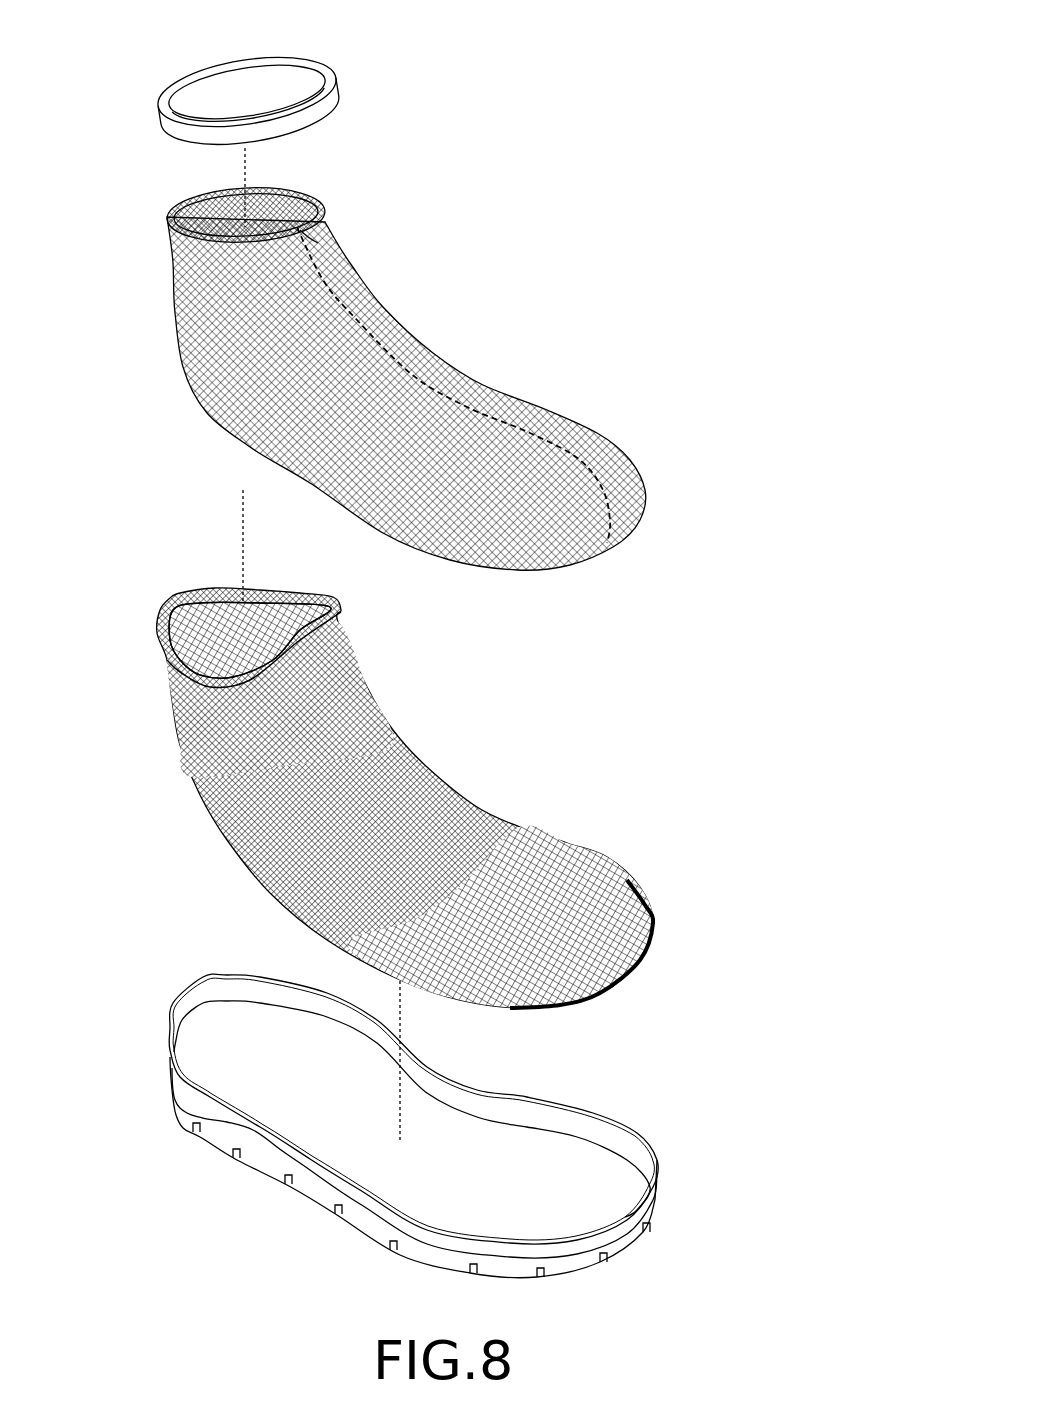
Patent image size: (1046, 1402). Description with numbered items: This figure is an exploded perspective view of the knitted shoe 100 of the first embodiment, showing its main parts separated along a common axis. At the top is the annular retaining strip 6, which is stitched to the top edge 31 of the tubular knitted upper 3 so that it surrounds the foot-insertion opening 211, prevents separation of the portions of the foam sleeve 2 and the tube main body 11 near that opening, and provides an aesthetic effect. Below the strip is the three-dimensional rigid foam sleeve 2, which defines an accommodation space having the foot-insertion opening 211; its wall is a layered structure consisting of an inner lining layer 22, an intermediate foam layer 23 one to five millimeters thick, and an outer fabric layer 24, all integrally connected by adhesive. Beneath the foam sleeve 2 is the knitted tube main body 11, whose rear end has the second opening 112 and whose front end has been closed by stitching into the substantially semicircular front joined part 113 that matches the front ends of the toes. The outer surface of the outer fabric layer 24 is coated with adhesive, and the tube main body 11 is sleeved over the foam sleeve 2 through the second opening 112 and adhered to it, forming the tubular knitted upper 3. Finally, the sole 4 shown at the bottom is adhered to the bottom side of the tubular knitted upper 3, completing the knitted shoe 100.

The knitted shoe 100 is at (700, 229).
The annular retaining strip 6 is at (340, 62).
The tubular knitted upper 3 is at (737, 388).
The foam sleeve 2 is at (609, 416).
The inner lining layer 22 is at (190, 215).
The foot-insertion opening 211 is at (282, 212).
The intermediate foam layer 23 is at (330, 222).
The outer fabric layer 24 is at (427, 362).
The tube main body 11 is at (641, 859).
The second opening 112 is at (200, 633).
The top edge 31 is at (341, 611).
The front joined part 113 is at (622, 982).
The sole 4 is at (674, 1124).